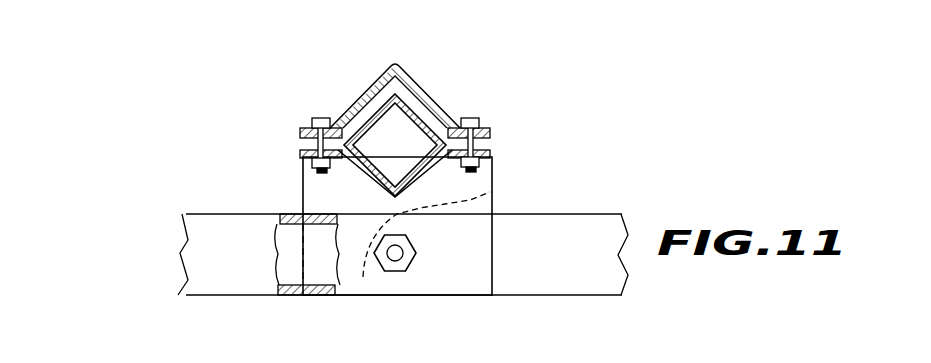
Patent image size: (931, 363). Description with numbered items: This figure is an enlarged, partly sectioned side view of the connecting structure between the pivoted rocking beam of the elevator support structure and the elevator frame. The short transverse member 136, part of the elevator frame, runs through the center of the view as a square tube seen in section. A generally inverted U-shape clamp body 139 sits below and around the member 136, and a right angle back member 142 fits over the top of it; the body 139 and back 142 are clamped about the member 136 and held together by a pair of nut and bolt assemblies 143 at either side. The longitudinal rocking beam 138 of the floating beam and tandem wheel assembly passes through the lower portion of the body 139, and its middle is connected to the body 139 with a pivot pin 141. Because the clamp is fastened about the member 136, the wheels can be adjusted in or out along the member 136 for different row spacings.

The short transverse member 136 is at (413, 110).
The longitudinal rocking beam 138 is at (578, 227).
The clamp body 139 is at (480, 183).
The pivot pin 141 is at (395, 257).
The right angle back member 142 is at (393, 90).
The nut and bolt assemblies 143 is at (322, 118).